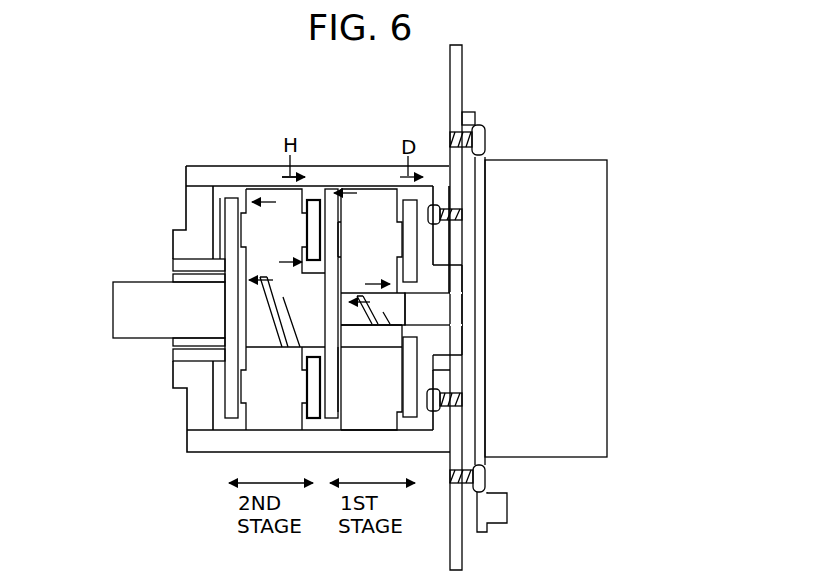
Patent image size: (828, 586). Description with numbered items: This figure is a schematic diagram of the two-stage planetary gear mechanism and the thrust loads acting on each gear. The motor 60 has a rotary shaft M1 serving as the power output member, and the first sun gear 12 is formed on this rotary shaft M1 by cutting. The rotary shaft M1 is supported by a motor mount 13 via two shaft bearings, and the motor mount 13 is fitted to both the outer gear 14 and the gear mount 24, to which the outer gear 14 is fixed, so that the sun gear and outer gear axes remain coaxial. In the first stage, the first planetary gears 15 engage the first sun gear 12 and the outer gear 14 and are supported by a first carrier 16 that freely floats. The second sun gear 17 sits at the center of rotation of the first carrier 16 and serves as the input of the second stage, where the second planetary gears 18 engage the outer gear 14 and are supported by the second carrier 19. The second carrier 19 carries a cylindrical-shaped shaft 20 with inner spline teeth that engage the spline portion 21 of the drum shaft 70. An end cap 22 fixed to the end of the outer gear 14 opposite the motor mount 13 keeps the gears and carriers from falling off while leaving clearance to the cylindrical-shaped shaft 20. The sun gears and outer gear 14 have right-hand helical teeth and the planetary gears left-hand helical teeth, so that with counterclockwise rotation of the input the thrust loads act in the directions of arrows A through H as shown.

The first sun gear 12 is at (395, 303).
The motor mount 13 is at (468, 375).
The outer gear 14 is at (243, 177).
The first planetary gears 15 is at (385, 199).
The first carrier 16 is at (328, 195).
The second sun gear 17 is at (255, 310).
The second planetary gears 18 is at (248, 256).
The second carrier 19 is at (232, 368).
The cylindrical-shaped shaft 20 is at (182, 268).
The spline portion 21 is at (173, 278).
The end cap 22 is at (182, 393).
The gear mount 24 is at (457, 552).
The motor 60 is at (608, 194).
The drum shaft 70 is at (122, 306).
The rotary shaft M1 is at (445, 307).